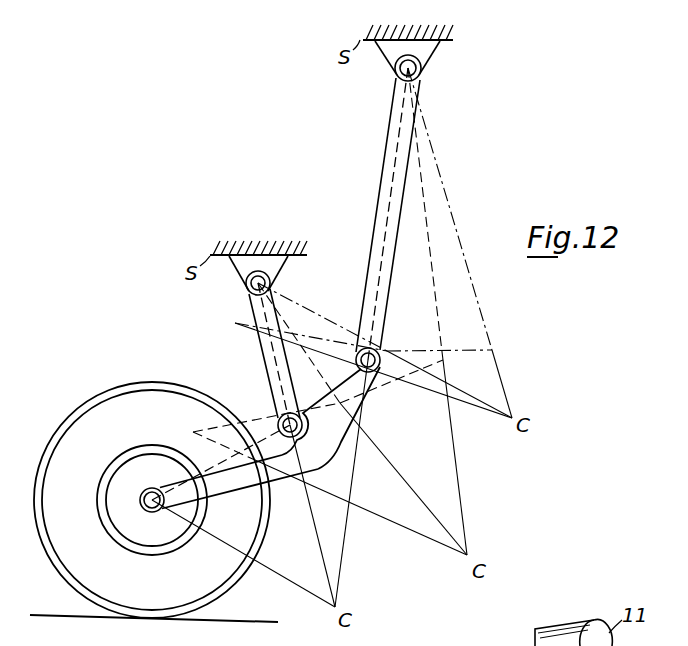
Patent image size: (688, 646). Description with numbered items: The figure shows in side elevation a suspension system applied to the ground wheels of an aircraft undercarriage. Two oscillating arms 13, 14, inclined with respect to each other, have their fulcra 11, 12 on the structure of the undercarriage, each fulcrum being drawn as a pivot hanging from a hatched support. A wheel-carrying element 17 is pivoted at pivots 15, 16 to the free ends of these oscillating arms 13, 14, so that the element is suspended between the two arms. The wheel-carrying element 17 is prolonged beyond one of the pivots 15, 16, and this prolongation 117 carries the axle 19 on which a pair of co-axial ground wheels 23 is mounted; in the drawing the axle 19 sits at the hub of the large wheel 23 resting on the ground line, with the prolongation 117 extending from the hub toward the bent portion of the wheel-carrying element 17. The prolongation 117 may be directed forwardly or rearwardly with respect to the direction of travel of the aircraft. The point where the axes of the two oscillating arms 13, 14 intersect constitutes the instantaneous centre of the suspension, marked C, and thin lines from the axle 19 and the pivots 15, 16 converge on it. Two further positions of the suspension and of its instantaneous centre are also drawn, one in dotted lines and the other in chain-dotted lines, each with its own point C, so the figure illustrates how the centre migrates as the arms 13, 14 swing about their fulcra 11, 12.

The fulcrum 11 is at (421, 70).
The fulcrum 12 is at (247, 288).
The oscillating arm 13 is at (388, 150).
The oscillating arm 14 is at (262, 372).
The pivot 15 is at (380, 354).
The pivot 16 is at (279, 413).
The wheel-carrying element 17 is at (330, 444).
The prolongation 117 is at (240, 485).
The axle 19 is at (150, 512).
The ground wheels 23 is at (127, 398).